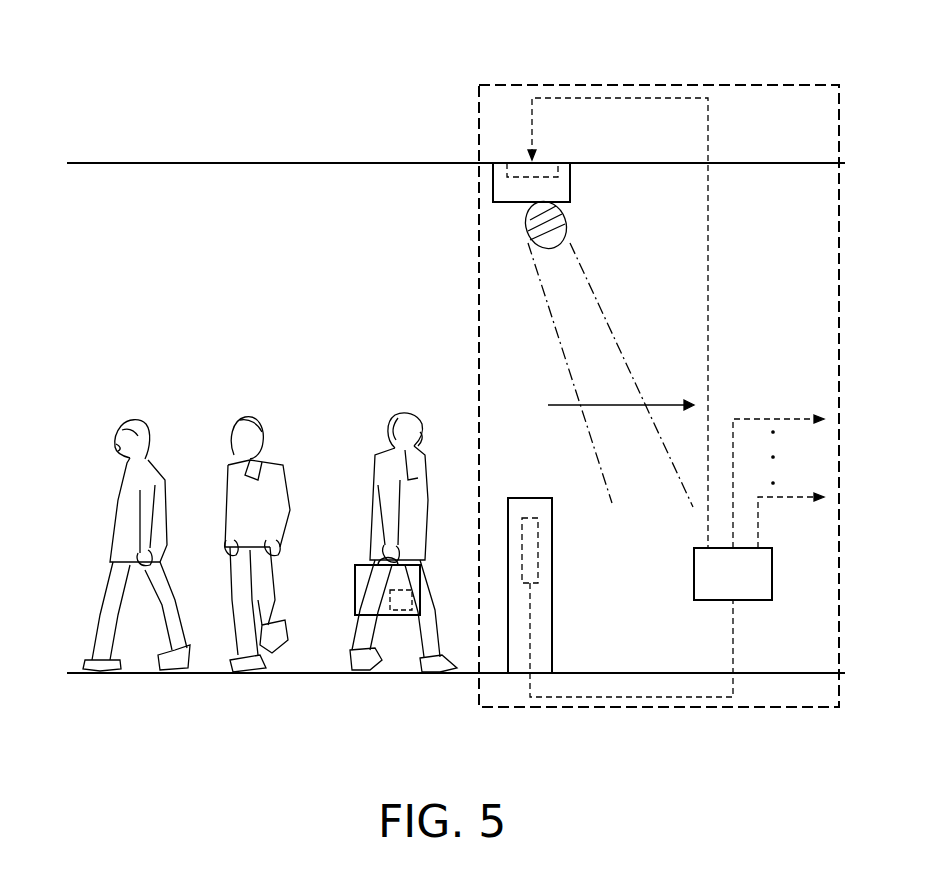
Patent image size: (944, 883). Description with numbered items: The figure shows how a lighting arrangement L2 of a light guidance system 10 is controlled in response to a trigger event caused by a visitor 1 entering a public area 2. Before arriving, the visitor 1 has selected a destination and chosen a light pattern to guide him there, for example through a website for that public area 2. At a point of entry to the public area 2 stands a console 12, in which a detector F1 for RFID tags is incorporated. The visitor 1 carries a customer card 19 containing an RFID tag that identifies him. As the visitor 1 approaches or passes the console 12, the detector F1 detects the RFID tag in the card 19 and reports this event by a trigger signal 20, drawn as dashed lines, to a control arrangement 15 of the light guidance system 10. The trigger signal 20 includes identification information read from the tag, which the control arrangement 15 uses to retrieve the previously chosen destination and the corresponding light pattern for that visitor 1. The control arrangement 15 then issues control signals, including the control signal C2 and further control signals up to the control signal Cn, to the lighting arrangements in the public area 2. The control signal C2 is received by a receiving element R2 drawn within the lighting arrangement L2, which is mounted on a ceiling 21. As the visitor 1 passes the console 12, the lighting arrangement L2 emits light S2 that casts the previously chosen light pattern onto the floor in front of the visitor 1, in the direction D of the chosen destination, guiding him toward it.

The ceiling 21 is at (357, 162).
The public area 2 is at (309, 268).
The light guidance system 10 is at (586, 85).
The control signal C2 is at (660, 98).
The control signal Cn is at (796, 497).
The lighting arrangement L2 is at (570, 185).
The receiver R2 is at (512, 167).
The light beam / sensor signal S2 is at (528, 240).
The direction D is at (605, 402).
The console 12 is at (530, 498).
The detector F1 is at (552, 548).
The control arrangement 15 is at (747, 587).
The trigger signal 20 is at (655, 698).
The visitor 1 is at (368, 528).
The customer card 19 is at (403, 612).